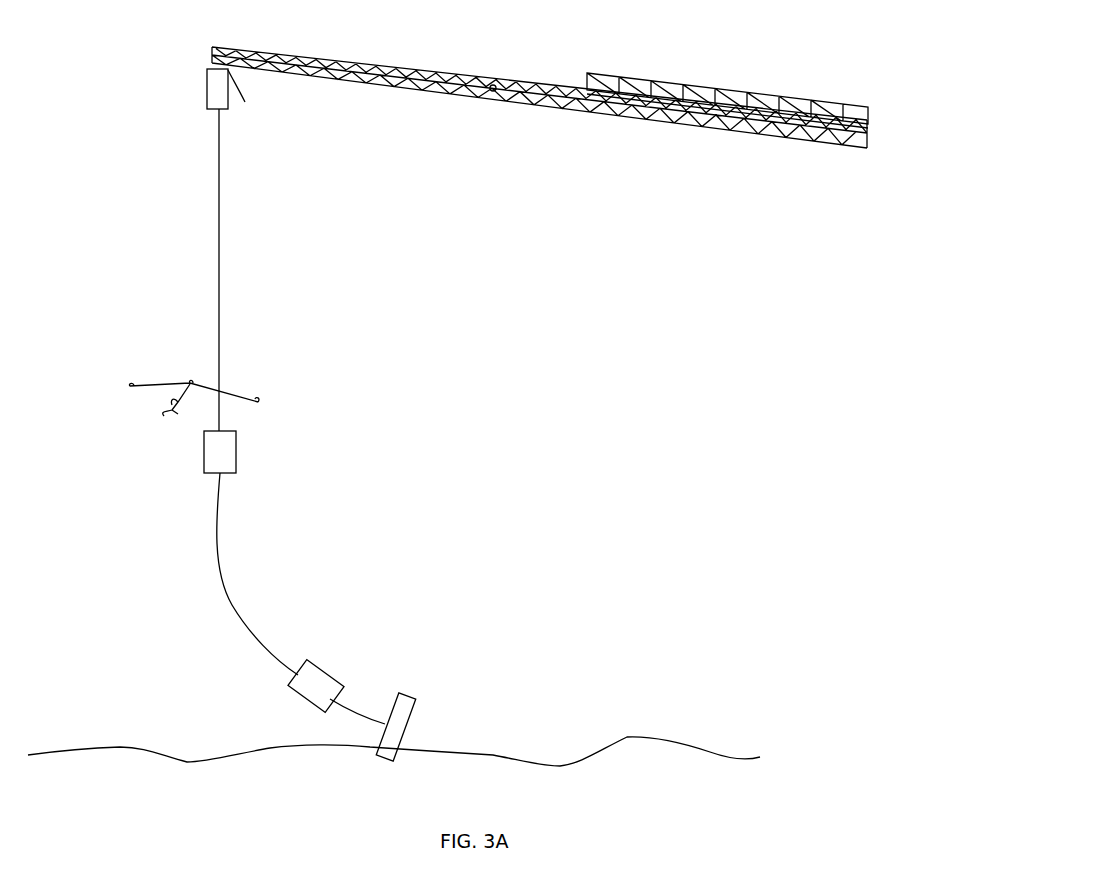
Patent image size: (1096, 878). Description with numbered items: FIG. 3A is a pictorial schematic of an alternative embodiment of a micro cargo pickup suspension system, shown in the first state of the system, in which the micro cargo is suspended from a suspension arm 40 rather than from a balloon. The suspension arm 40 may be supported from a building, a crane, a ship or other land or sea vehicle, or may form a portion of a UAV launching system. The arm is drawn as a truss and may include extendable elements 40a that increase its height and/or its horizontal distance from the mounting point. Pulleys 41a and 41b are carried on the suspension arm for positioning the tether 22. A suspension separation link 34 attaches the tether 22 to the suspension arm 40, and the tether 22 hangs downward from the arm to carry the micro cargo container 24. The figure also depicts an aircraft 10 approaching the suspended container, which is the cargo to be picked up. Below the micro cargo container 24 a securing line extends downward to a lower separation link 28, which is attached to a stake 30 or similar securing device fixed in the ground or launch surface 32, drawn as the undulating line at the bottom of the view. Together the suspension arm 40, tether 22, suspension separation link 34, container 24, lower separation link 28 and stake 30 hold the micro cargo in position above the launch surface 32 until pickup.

The bird-shaped scaring device 10 is at (191, 397).
The tether 22 is at (221, 262).
The micro cargo container 24 is at (213, 454).
The lower separation link 28 is at (318, 684).
The stake 30 is at (393, 728).
The launch surface 32 is at (660, 737).
The suspension separation link 34 is at (205, 71).
The suspension arm 40 is at (714, 62).
The extendable elements 40a is at (325, 52).
The pulley 41a is at (261, 96).
The pulley 41b is at (500, 82).